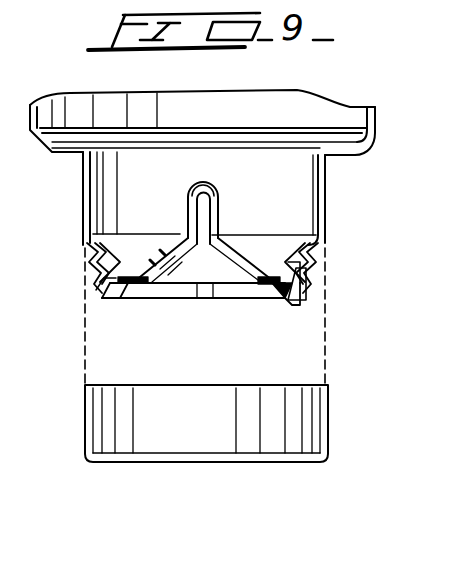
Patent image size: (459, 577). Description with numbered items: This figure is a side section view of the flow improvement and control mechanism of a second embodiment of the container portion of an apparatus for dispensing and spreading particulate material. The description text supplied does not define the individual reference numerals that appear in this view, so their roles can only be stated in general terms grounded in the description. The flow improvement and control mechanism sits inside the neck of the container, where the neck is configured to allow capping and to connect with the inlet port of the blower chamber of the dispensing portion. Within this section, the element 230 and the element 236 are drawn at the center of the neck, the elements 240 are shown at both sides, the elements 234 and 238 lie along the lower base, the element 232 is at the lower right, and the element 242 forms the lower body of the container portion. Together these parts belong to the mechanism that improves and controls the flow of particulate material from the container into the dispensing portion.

The piercing post 230 is at (174, 240).
The seal ring 232 is at (299, 292).
The left base foot 234 is at (128, 297).
The post tip 236 is at (216, 186).
The right base foot 238 is at (282, 294).
The flexible lug 240 is at (123, 260).
The container body 242 is at (103, 418).